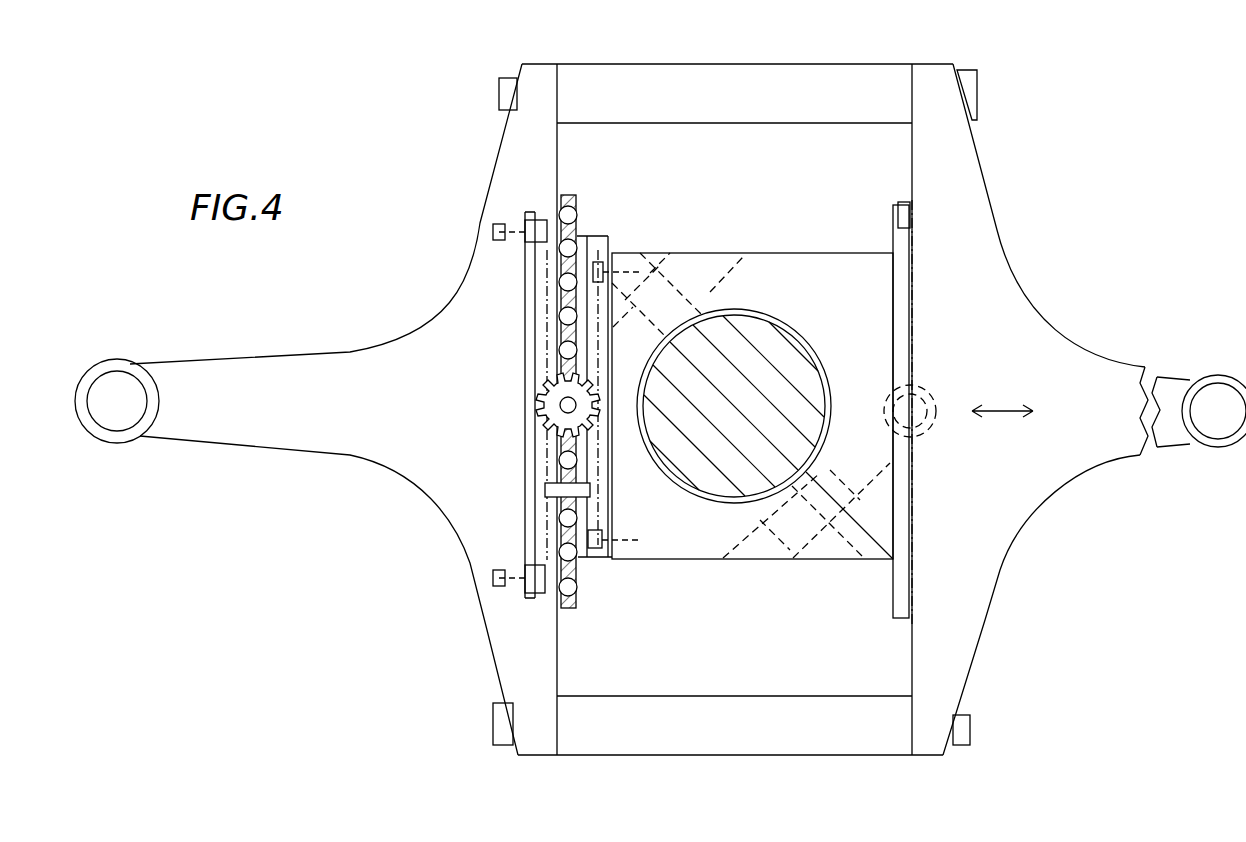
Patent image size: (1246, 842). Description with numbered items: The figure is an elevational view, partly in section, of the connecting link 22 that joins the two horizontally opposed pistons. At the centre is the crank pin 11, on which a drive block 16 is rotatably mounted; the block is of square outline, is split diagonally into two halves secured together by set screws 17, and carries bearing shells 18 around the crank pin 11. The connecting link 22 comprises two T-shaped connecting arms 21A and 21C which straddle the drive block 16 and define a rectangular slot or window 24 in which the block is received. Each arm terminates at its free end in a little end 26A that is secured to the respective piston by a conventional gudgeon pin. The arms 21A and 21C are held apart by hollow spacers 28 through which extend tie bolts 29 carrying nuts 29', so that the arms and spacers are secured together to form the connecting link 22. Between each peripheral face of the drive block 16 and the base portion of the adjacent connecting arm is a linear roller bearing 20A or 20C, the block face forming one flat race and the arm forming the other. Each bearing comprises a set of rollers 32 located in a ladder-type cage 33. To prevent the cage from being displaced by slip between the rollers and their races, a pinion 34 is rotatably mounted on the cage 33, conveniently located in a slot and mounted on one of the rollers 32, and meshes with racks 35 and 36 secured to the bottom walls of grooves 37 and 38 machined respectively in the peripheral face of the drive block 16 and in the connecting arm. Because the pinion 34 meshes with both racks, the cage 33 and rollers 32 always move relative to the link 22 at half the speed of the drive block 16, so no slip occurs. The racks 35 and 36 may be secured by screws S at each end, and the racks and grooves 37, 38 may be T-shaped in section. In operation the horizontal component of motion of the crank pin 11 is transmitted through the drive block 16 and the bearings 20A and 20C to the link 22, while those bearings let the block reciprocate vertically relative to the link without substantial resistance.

The crank pin 11 is at (734, 406).
The drive block 16 is at (810, 282).
The set screws 17 is at (825, 538).
The bearing shells 18 is at (812, 345).
The linear roller bearing 20A is at (580, 186).
The linear roller bearing 20C is at (893, 248).
The connecting arm 21A is at (294, 384).
The connecting arm 21C is at (1008, 320).
The connecting link 22 is at (470, 601).
The rectangular slot or window 24 is at (734, 686).
The little end 26A is at (135, 368).
The hollow spacers 28 is at (660, 80).
The tie bolts 29 is at (497, 393).
The nuts 29' is at (981, 386).
The rollers 32 is at (578, 214).
The ladder-type cage 33 is at (585, 250).
The pinion 34 is at (546, 400).
The rack 35 is at (596, 424).
The rack 36 is at (530, 290).
The groove 37 is at (600, 515).
The groove 38 is at (530, 497).
The screws S is at (515, 232).